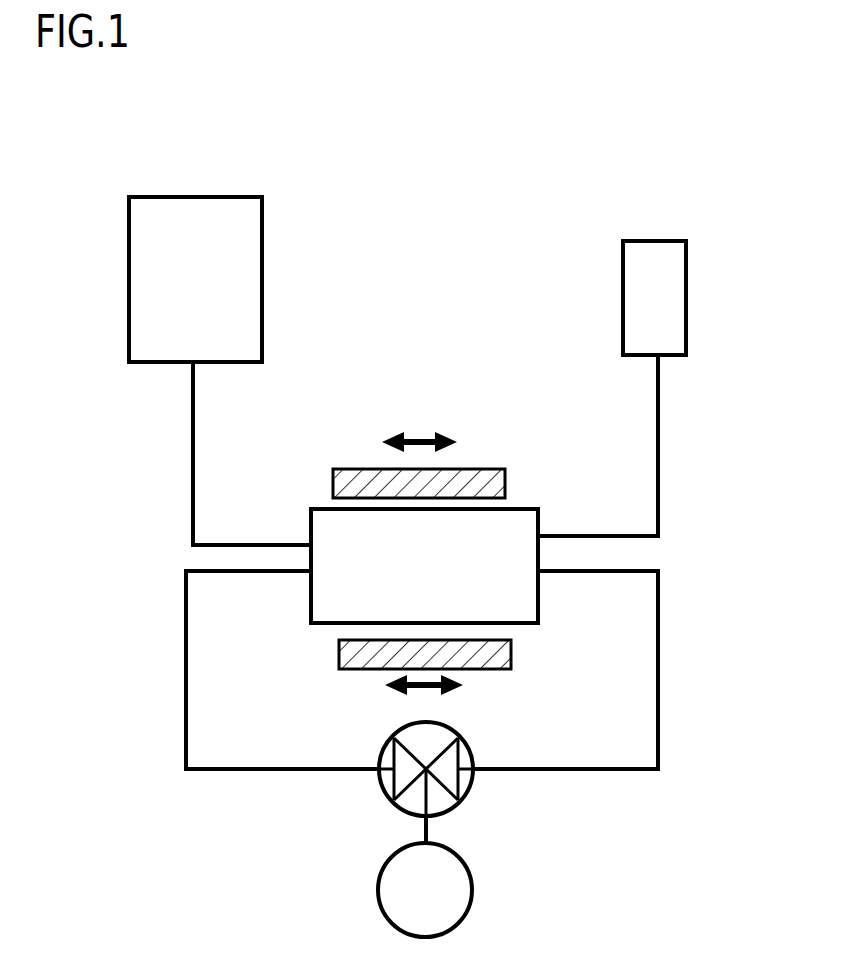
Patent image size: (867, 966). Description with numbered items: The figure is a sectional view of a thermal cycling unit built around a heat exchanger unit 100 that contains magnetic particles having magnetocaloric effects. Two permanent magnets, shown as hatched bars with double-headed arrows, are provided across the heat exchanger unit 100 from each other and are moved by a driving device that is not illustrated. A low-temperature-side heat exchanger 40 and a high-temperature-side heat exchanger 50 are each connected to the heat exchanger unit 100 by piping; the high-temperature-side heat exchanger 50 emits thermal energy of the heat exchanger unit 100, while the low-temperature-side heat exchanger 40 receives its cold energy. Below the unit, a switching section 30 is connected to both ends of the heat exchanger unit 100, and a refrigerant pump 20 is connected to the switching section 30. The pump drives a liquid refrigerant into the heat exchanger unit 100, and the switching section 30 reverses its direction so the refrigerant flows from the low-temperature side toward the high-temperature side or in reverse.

The refrigerant pump 20 is at (388, 922).
The switching section 30 is at (393, 800).
The low-temperature-side heat exchanger 40 is at (193, 220).
The high-temperature-side heat exchanger 50 is at (658, 250).
The heat exchanger unit 100 is at (516, 537).